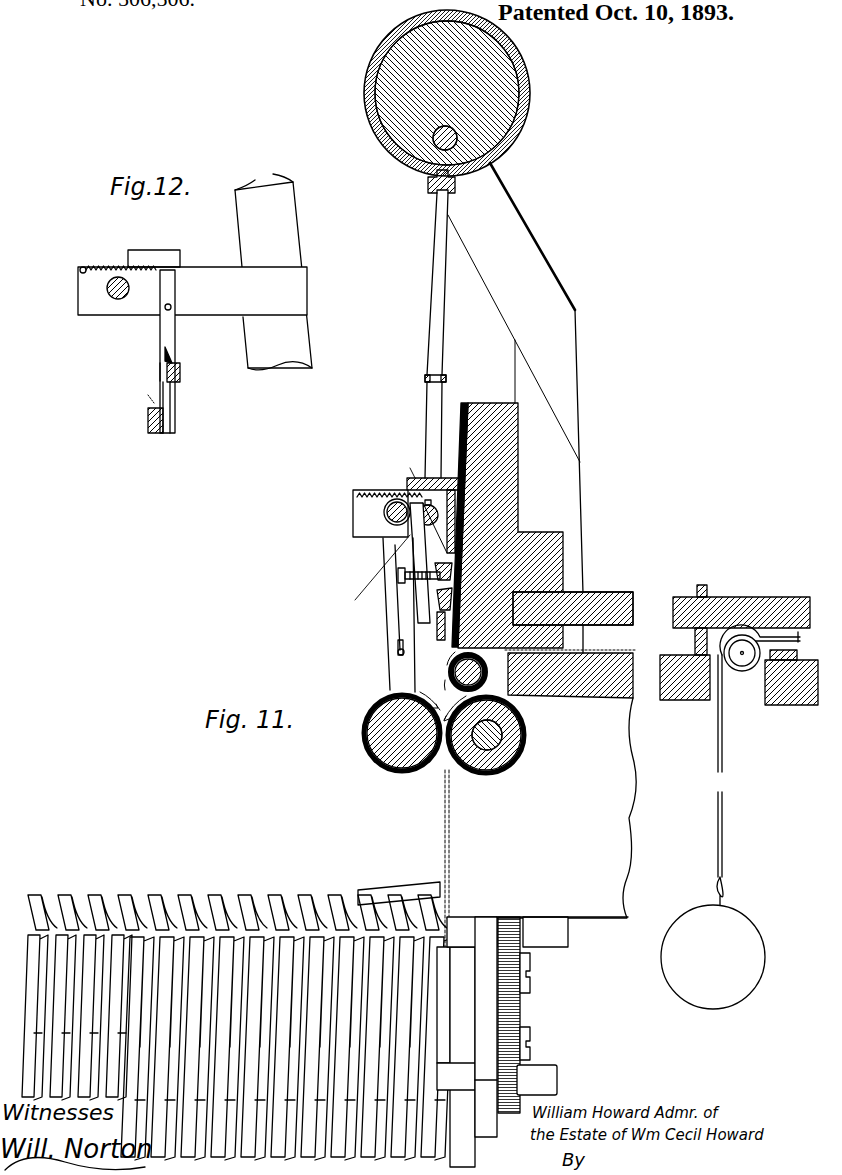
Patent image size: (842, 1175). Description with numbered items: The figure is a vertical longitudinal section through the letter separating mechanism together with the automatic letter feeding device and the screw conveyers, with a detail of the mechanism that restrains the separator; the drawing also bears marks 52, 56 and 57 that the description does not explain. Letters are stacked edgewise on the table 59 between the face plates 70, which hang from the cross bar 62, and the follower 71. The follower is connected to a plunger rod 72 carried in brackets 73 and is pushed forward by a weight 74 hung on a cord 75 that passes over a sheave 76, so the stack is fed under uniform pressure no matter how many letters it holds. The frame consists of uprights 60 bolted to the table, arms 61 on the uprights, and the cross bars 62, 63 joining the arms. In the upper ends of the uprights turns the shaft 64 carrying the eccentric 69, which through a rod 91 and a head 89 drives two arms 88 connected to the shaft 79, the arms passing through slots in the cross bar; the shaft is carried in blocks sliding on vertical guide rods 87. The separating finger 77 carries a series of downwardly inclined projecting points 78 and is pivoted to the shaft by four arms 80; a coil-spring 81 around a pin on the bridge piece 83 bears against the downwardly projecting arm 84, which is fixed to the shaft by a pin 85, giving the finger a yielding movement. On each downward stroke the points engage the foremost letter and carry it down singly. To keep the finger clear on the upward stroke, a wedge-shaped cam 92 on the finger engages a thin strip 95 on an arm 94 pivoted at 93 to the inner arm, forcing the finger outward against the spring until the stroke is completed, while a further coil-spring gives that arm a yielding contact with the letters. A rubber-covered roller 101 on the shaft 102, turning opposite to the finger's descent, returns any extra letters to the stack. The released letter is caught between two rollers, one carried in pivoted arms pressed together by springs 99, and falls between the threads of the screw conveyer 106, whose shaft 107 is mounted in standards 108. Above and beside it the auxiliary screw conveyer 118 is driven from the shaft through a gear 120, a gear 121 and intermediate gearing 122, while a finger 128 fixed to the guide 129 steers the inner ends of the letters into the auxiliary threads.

In FIG. 11, the stop piece 52 is at (452, 596).
In FIG. 11, the feed roller 56 is at (493, 734).
In FIG. 11, the feed roller 57 is at (402, 731).
In FIG. 11, the table 59 is at (661, 671).
In FIG. 11, the uprights 60 is at (541, 540).
In FIG. 12, the uprights 60 is at (285, 272).
In FIG. 11, the arms 61 is at (371, 513).
In FIG. 12, the arms 61 is at (192, 291).
In FIG. 11, the cross bar 62 is at (455, 478).
In FIG. 12, the cross bar 62 is at (154, 250).
In FIG. 11, the cross bar 63 is at (384, 512).
In FIG. 12, the cross bar 63 is at (110, 288).
In FIG. 11, the shaft 64 is at (457, 138).
In FIG. 11, the eccentric 69 is at (458, 101).
In FIG. 11, the face plates 70 is at (435, 512).
In FIG. 11, the follower 71 is at (507, 525).
In FIG. 11, the plunger rod 72 is at (655, 608).
In FIG. 11, the brackets 73 is at (691, 641).
In FIG. 11, the weight 74 is at (713, 957).
In FIG. 11, the cord 75 is at (745, 743).
In FIG. 11, the sheave 76 is at (742, 671).
In FIG. 11, the finger 77 is at (443, 626).
In FIG. 12, the finger 77 is at (163, 373).
In FIG. 12, the projecting points 78 is at (180, 375).
In FIG. 11, the shaft 79 is at (400, 545).
In FIG. 11, the arms 80 is at (428, 563).
In FIG. 11, the coil-spring 81 is at (410, 585).
In FIG. 11, the bridge piece 83 is at (450, 572).
In FIG. 11, the arm 84 is at (405, 568).
In FIG. 11, the pin 85 is at (405, 466).
In FIG. 11, the guide rods 87 is at (436, 567).
In FIG. 11, the arms 88 is at (424, 430).
In FIG. 11, the head 89 is at (446, 380).
In FIG. 11, the rod 91 is at (448, 284).
In FIG. 12, the wedge-shaped cam 92 is at (175, 358).
In FIG. 12, the pivot 93 is at (165, 307).
In FIG. 12, the arm 94 is at (175, 330).
In FIG. 11, the thin strip 95 is at (487, 735).
In FIG. 12, the thin strip 95 is at (170, 408).
In FIG. 11, the springs 99 is at (396, 635).
In FIG. 11, the roller 101 is at (488, 678).
In FIG. 11, the shaft 102 is at (488, 668).
In FIG. 11, the screw conveyer 106 is at (238, 1047).
In FIG. 11, the shaft 107 is at (537, 1080).
In FIG. 11, the standards 108 is at (474, 1042).
In FIG. 11, the auxiliary screw conveyer 118 is at (237, 905).
In FIG. 11, the gear 120 is at (530, 1062).
In FIG. 11, the gear 121 is at (525, 930).
In FIG. 11, the intermediate gearing 122 is at (526, 1015).
In FIG. 11, the finger 128 is at (399, 888).
In FIG. 11, the guide 129 is at (434, 858).